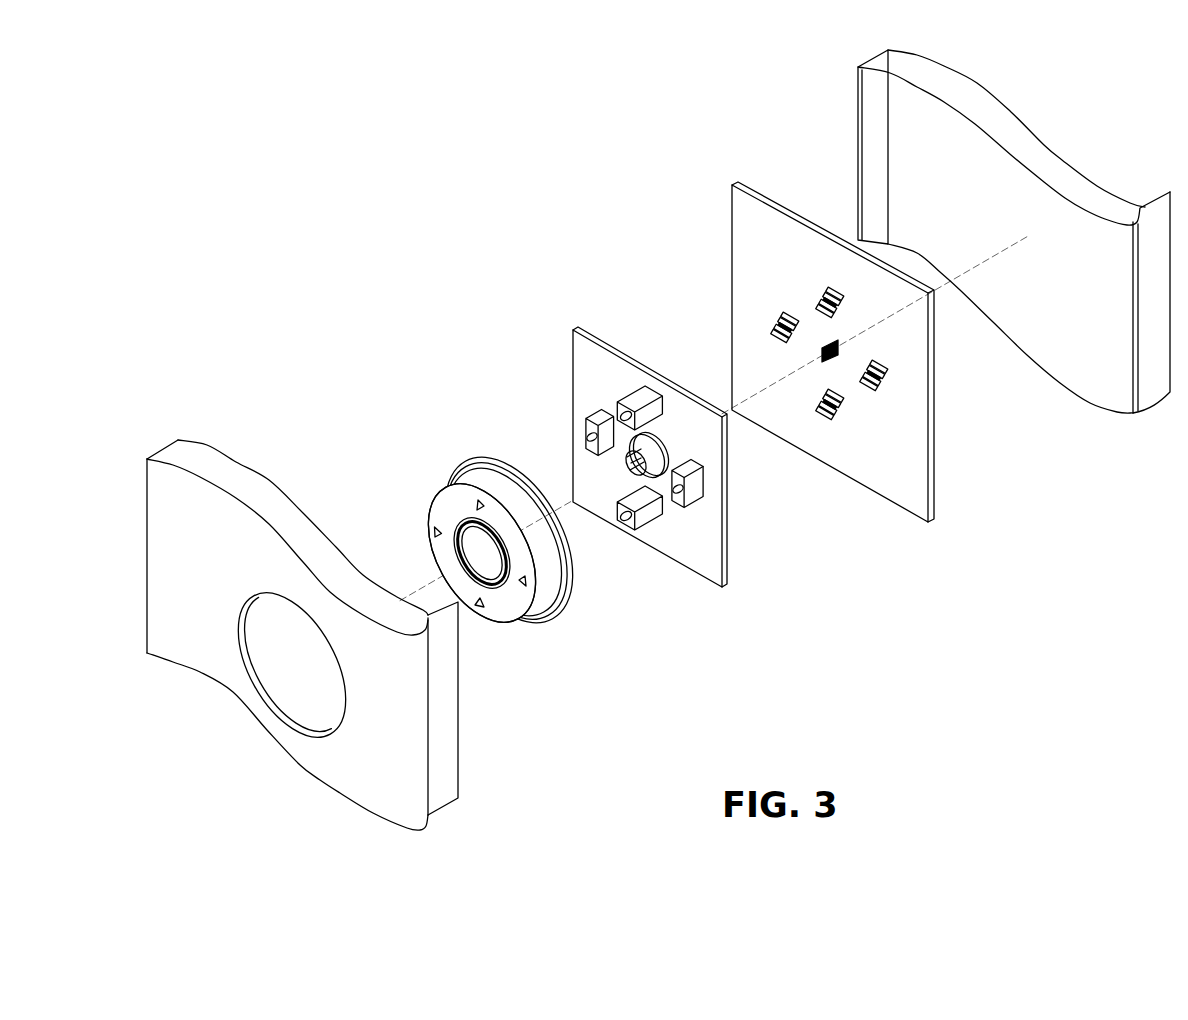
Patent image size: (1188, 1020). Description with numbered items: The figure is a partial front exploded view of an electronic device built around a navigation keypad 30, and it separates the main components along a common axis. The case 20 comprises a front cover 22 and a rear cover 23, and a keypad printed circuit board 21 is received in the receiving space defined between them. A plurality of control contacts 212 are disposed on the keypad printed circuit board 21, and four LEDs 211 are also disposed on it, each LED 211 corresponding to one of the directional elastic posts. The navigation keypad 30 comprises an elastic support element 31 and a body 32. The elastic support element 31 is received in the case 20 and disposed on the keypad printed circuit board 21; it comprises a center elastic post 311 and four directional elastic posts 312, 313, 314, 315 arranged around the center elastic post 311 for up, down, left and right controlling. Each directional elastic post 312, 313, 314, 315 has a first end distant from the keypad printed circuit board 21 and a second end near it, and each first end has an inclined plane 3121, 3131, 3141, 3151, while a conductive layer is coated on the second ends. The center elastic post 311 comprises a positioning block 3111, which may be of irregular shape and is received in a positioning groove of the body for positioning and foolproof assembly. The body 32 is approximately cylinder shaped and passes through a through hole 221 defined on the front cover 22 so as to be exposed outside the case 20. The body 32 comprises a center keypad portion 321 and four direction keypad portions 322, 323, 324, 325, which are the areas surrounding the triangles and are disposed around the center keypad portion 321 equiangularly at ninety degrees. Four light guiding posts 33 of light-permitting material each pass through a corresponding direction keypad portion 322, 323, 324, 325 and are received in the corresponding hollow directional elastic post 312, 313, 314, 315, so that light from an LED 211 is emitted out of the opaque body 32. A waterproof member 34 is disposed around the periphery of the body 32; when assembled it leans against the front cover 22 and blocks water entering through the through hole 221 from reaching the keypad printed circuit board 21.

The case 20 is at (617, 94).
The keypad printed circuit board 21 is at (833, 358).
The LED 211 is at (827, 287).
The control contact 212 is at (820, 292).
The front cover 22 is at (317, 580).
The through hole 221 is at (280, 717).
The rear cover 23 is at (877, 122).
The navigation keypad 30 is at (833, 651).
The elastic support element 31 is at (651, 473).
The center elastic post 311 is at (681, 412).
The positioning block 3111 is at (655, 455).
The directional elastic post 312 is at (650, 357).
The inclined plane 3121 is at (622, 408).
The directional elastic post 313 is at (693, 480).
The inclined plane 3131 is at (702, 484).
The directional elastic post 314 is at (676, 574).
The inclined plane 3141 is at (670, 515).
The directional elastic post 315 is at (552, 377).
The inclined plane 3151 is at (585, 435).
The body 32 is at (518, 603).
The center keypad portion 321 is at (470, 545).
The direction keypad portion 322 is at (488, 515).
The direction keypad portion 323 is at (523, 583).
The direction keypad portion 324 is at (497, 610).
The direction keypad portion 325 is at (442, 522).
The light guiding post 33 is at (437, 532).
The waterproof member 34 is at (570, 567).